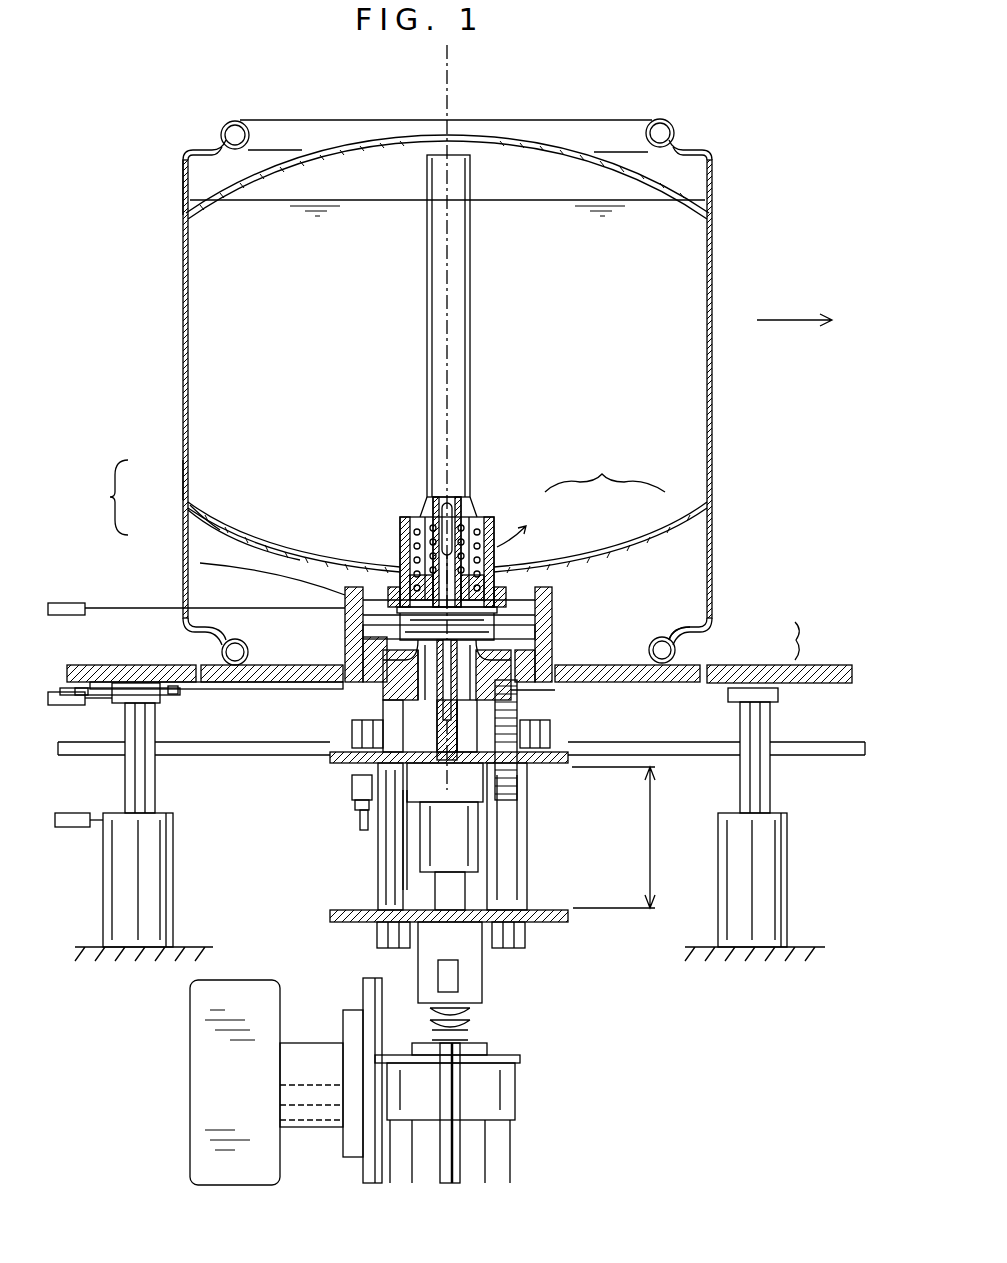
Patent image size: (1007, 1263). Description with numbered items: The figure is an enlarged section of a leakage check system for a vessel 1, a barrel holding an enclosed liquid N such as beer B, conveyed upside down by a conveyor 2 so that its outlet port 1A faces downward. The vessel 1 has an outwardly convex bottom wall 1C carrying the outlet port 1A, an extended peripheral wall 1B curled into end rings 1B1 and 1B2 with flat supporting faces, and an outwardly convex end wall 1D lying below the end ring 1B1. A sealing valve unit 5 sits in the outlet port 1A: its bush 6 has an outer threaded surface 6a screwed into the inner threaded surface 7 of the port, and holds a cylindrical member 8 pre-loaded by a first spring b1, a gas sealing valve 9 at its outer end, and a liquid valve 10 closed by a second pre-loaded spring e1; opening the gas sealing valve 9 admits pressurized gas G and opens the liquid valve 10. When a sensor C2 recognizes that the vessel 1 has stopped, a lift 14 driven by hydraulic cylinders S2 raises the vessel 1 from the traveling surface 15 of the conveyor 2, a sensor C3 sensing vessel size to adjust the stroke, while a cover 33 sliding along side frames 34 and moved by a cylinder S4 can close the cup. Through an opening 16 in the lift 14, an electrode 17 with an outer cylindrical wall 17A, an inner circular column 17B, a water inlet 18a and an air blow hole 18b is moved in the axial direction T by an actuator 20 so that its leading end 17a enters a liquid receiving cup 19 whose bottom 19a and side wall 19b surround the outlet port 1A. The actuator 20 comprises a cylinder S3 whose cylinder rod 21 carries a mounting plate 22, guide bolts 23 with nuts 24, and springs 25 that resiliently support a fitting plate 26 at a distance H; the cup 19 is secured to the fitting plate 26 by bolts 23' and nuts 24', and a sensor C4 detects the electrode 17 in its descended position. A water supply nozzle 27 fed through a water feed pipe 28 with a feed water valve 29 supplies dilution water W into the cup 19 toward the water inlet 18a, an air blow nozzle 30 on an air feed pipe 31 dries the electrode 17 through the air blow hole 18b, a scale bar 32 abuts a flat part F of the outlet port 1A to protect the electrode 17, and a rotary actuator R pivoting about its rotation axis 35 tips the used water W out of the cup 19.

The vessel 1 is at (109, 497).
The outlet port 1A is at (200, 545).
The extended peripheral wall 1B is at (185, 472).
The bottom wall 1C is at (192, 510).
The end wall 1D is at (205, 190).
The end ring 1B1 is at (230, 122).
The end ring 1B2 is at (222, 652).
The beer B is at (210, 270).
The axial direction T is at (452, 62).
The enclosed liquid N is at (648, 200).
The conveying direction A is at (794, 309).
The first spring b1 is at (440, 510).
The second pre-loaded spring e1 is at (436, 540).
The cylindrical member 8 is at (430, 530).
The inner threaded surface 7 is at (412, 580).
The outer threaded surface 6a is at (392, 595).
The bush 6 is at (548, 590).
The liquid valve 10 is at (505, 556).
The gas sealing valve 9 is at (578, 607).
The sealing valve unit 5 is at (605, 470).
The pressurized gas G is at (514, 522).
The air blow nozzle 30 is at (565, 598).
The dilution water W is at (588, 615).
The air blow hole 18b is at (575, 628).
The outer cylindrical wall 17A is at (678, 634).
The inner circular column 17B is at (675, 650).
The electrode 17 is at (813, 641).
The leading end 17a is at (383, 655).
The scale bar 32 is at (345, 612).
The flange F is at (343, 600).
The water supply nozzle 27 is at (385, 668).
The water inlet 18a is at (380, 695).
The liquid receiving cup 19 is at (266, 690).
The bottom 19a is at (385, 780).
The side wall 19b is at (200, 563).
The sensor C2 is at (63, 603).
The sensor C3 is at (56, 692).
The sensor C4 is at (75, 828).
The cylinder S4 is at (85, 688).
The hydraulic cylinder S2 is at (155, 884).
The cylinder S3 is at (490, 1148).
The cover 33 is at (296, 690).
The side frames 34 is at (222, 692).
The lift 14 is at (795, 684).
The opening 16 is at (575, 688).
The air feed pipe 31 is at (555, 705).
The fitting plate 26 is at (580, 755).
The water feed pipe 28 is at (355, 735).
The conveyor 2 is at (92, 757).
The traveling surface 15 is at (822, 755).
The bolts 23' is at (559, 740).
The nuts 24' is at (543, 836).
The feed water valve 29 is at (355, 815).
The guide bolts 23 is at (333, 836).
The springs 25 is at (400, 892).
The distance H is at (621, 837).
The nuts 24 is at (410, 940).
The mounting plate 22 is at (570, 920).
The cylinder rod 21 is at (482, 965).
The actuator 20 is at (520, 1105).
The rotary actuator R is at (200, 1055).
The rotation axis 35 is at (315, 1128).